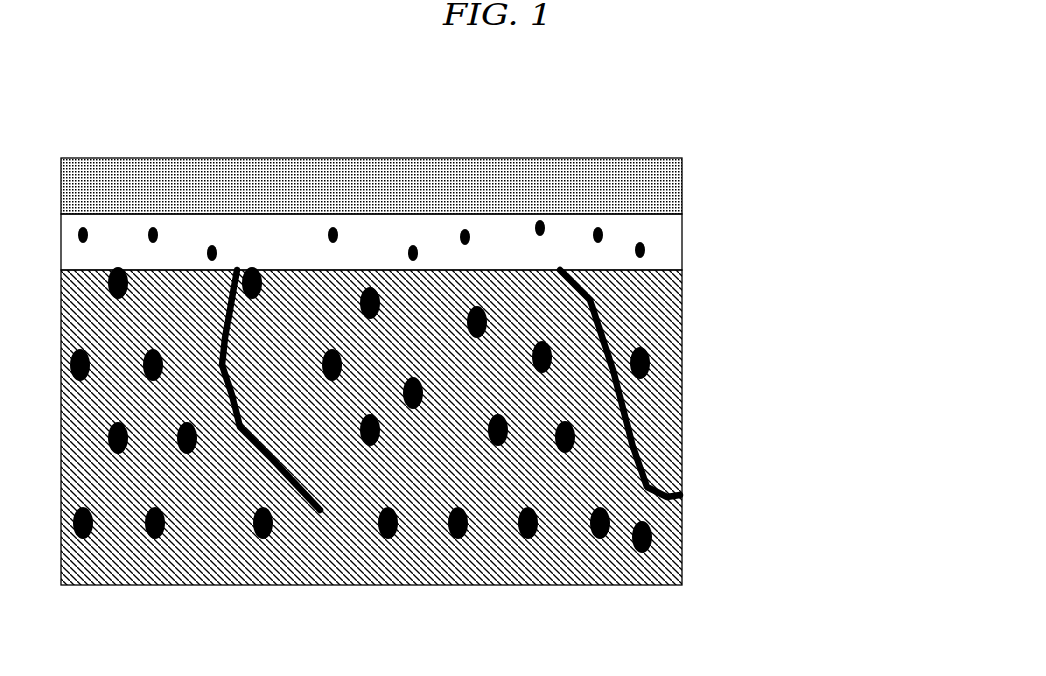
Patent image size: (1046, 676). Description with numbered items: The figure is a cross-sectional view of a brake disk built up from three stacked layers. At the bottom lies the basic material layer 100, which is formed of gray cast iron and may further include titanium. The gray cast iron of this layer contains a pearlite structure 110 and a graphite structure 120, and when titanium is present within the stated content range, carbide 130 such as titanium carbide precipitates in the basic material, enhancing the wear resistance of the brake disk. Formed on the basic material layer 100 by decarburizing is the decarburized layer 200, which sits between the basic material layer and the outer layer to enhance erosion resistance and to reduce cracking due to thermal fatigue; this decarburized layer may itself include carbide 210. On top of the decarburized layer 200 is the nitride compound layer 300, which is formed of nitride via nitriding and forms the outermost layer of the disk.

The basic material layer 100 is at (498, 471).
The pearlite structure 110 is at (508, 538).
The graphite structure 120 is at (297, 493).
The carbide 130 is at (448, 539).
The decarburized layer 200 is at (499, 171).
The carbide 210 is at (598, 233).
The nitride compound layer 300 is at (682, 186).